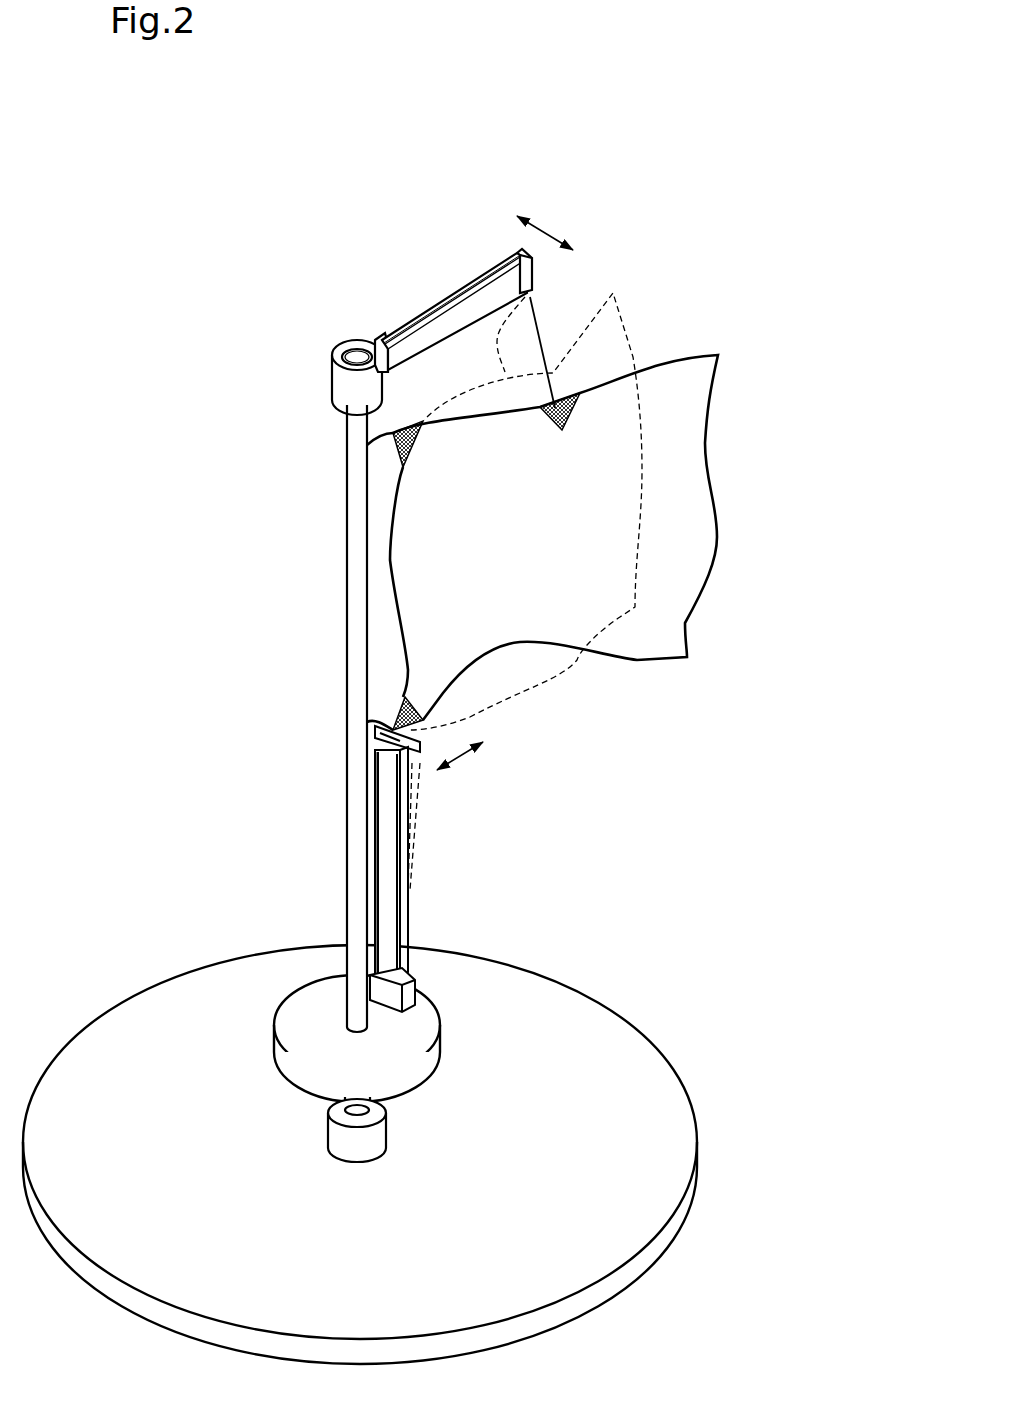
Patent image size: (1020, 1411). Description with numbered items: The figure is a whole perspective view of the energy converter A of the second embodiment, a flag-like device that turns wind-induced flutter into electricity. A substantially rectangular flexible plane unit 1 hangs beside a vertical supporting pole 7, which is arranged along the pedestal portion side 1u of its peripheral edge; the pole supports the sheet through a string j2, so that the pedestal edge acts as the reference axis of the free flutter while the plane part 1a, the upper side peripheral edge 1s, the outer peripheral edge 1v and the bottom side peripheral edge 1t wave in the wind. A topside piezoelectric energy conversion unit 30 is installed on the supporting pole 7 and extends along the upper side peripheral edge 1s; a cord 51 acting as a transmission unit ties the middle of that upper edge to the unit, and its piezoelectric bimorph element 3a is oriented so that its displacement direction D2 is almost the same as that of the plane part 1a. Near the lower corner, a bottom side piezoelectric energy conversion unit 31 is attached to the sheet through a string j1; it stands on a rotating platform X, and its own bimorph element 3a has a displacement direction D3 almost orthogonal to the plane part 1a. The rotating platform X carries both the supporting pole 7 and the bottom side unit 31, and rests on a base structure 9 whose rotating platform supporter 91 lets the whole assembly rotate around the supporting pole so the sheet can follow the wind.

The flexible plane unit 1 is at (678, 433).
The upper side peripheral edge 1s is at (675, 337).
The pedestal portion side of the peripheral edge 1u is at (397, 558).
The peripheral edge of the flexible plane unit 1v is at (723, 540).
The plane part 1a is at (680, 593).
The bottom side peripheral edge 1t is at (637, 663).
The supporting pole 7 is at (345, 672).
The base structure 9 is at (680, 1088).
The rotating platform supporter 91 is at (382, 1100).
The rotating platform X is at (280, 990).
The topside piezoelectric energy conversion unit 30 is at (465, 277).
The bottom side piezoelectric energy conversion unit 31 is at (420, 913).
The piezoelectric bimorph element 3a is at (417, 310).
The cord 51 is at (550, 307).
The string j1 is at (392, 718).
The string j2 is at (378, 432).
The energy converter A is at (245, 338).
The displacement direction D2 is at (545, 233).
The displacement direction D3 is at (460, 756).